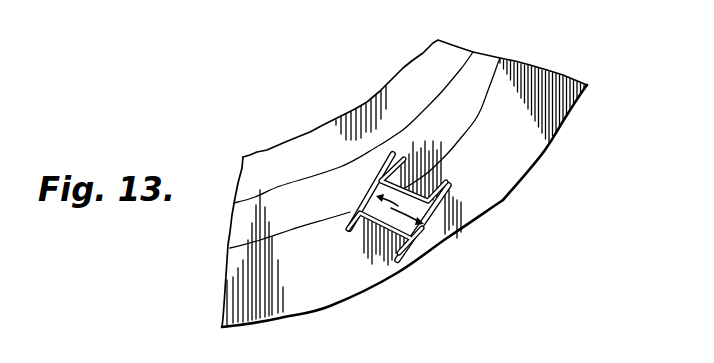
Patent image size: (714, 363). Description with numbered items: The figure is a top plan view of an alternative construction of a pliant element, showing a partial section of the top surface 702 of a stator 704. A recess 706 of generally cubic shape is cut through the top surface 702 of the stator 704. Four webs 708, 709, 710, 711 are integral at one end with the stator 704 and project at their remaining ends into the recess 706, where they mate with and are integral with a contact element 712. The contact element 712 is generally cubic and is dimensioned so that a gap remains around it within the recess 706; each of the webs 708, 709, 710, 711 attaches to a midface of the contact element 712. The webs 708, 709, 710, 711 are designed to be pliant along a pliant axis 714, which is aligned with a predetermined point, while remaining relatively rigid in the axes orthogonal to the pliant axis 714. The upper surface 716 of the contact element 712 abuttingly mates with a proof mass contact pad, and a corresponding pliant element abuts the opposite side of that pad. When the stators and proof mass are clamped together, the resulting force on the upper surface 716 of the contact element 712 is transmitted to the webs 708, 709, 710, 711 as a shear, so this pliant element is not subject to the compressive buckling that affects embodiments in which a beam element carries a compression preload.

The top surface 702 is at (547, 70).
The stator 704 is at (575, 125).
The recess 706 is at (438, 210).
The web 708 is at (392, 278).
The web 709 is at (350, 234).
The web 710 is at (452, 181).
The web 711 is at (396, 153).
The contact element 712 is at (415, 241).
The pliant axis 714 is at (361, 199).
The upper surface 716 is at (413, 228).